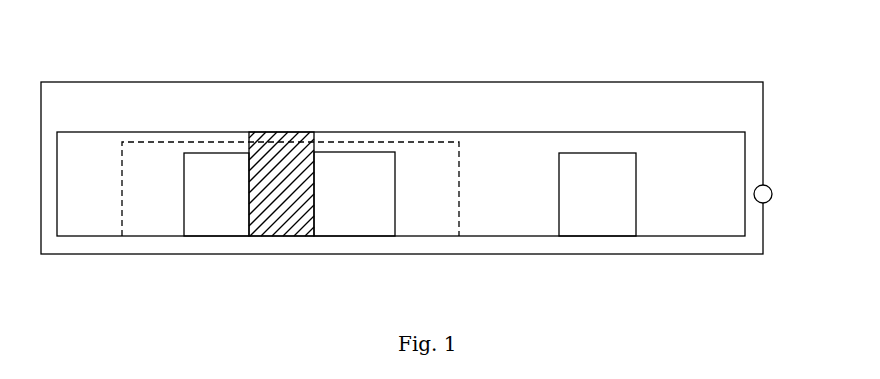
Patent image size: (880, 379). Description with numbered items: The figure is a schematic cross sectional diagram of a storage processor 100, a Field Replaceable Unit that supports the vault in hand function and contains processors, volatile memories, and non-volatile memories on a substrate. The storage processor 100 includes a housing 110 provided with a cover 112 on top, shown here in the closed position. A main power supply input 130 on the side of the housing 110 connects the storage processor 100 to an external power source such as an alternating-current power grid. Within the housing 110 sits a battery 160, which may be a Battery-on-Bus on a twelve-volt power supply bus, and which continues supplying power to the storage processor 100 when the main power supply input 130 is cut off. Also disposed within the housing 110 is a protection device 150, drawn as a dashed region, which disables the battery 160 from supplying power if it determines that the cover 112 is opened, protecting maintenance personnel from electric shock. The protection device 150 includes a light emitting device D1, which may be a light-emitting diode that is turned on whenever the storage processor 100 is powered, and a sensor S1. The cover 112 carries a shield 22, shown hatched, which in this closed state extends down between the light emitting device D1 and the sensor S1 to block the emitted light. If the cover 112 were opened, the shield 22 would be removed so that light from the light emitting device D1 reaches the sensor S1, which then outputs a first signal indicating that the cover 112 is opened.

The storage processor 100 is at (83, 63).
The cover 112 is at (597, 83).
The housing 110 is at (753, 158).
The main power supply input 130 is at (769, 187).
The protection device 150 is at (459, 186).
The light emitting device D1 is at (198, 195).
The shield 22 is at (315, 180).
The sensor S1 is at (378, 192).
The battery 160 is at (618, 207).